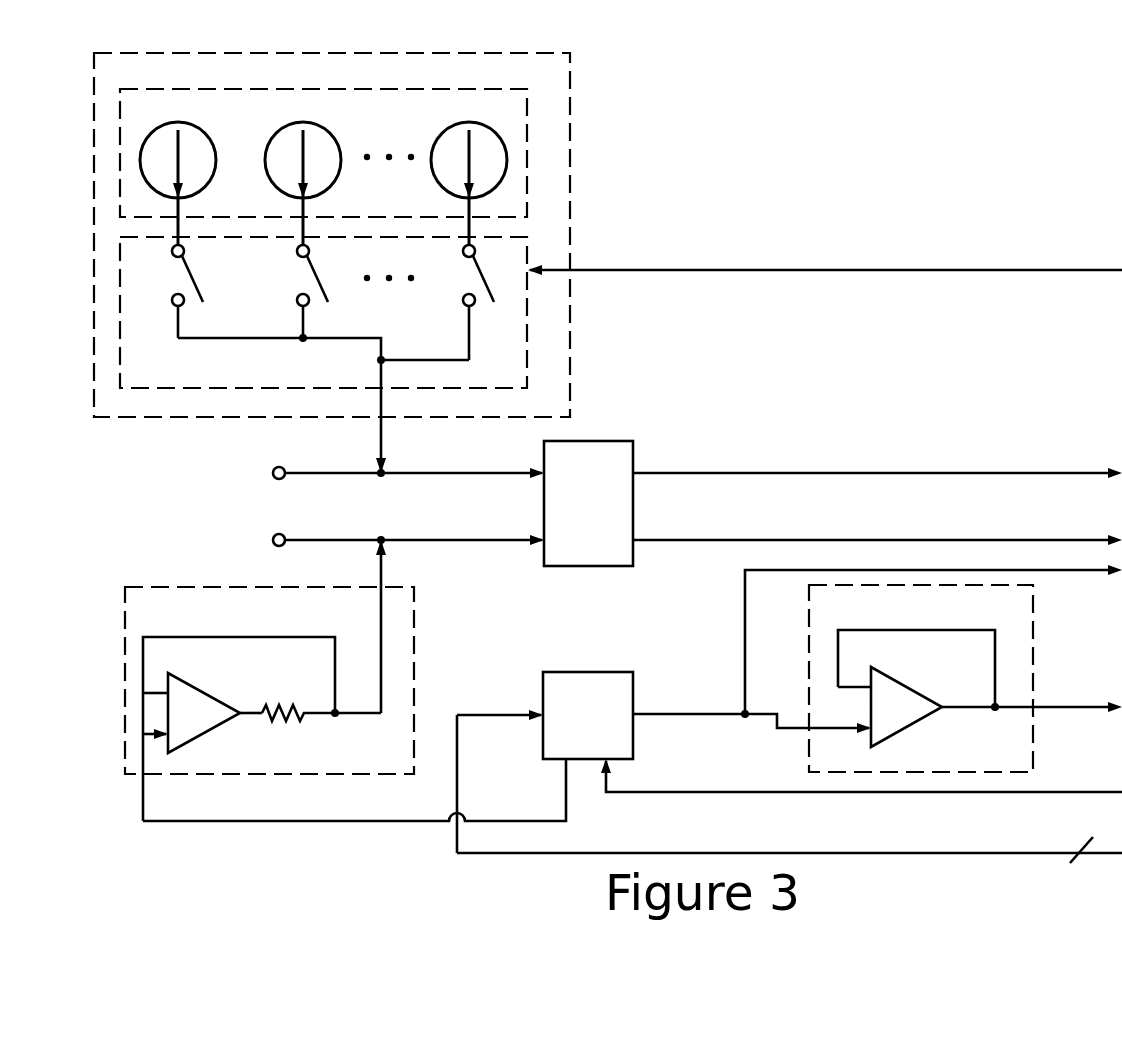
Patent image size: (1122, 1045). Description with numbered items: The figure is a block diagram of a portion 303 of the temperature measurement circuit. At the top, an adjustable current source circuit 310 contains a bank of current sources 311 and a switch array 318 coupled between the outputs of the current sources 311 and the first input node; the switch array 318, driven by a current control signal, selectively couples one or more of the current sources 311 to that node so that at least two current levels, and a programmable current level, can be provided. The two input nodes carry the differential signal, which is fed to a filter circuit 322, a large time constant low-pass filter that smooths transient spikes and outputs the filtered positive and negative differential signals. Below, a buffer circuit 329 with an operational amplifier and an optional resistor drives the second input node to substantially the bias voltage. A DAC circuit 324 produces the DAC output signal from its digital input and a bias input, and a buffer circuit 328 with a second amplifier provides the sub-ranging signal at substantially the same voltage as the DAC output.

The portion of temperature measurement circuit 303 is at (802, 113).
The adjustable current source circuit 310 is at (328, 78).
The current sources 311 is at (389, 122).
The switch array 318 is at (440, 343).
The filter circuit 322 is at (606, 551).
The DAC circuit 324 is at (605, 749).
The buffer circuit 328 is at (935, 613).
The buffer circuit 329 is at (294, 624).